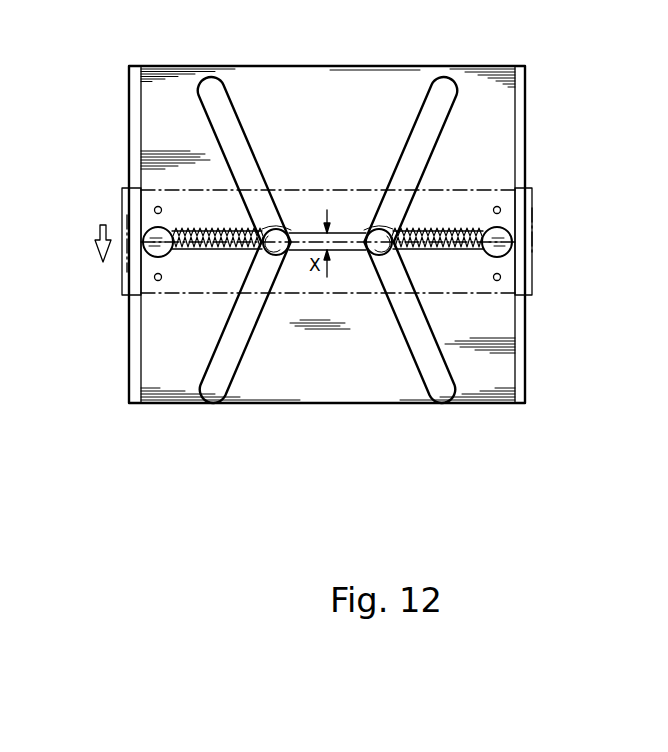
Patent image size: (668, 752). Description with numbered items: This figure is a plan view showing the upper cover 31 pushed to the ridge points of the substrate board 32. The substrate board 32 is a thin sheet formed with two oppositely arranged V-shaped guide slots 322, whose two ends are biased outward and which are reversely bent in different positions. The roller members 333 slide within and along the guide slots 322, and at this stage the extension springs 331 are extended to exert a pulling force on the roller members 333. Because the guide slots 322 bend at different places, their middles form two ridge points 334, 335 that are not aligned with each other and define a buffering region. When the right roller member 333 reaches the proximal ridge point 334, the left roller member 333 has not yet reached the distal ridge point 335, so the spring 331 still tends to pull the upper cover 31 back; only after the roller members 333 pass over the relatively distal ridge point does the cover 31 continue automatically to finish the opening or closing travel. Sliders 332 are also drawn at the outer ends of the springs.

The upper cover 31 is at (550, 234).
The substrate board 32 is at (545, 103).
The guide slot 322 is at (208, 294).
The extension spring 331 is at (220, 228).
The slider 332 is at (147, 222).
The roller member 333 is at (287, 222).
The proximal ridge point 334 is at (393, 228).
The distal ridge point 335 is at (257, 251).